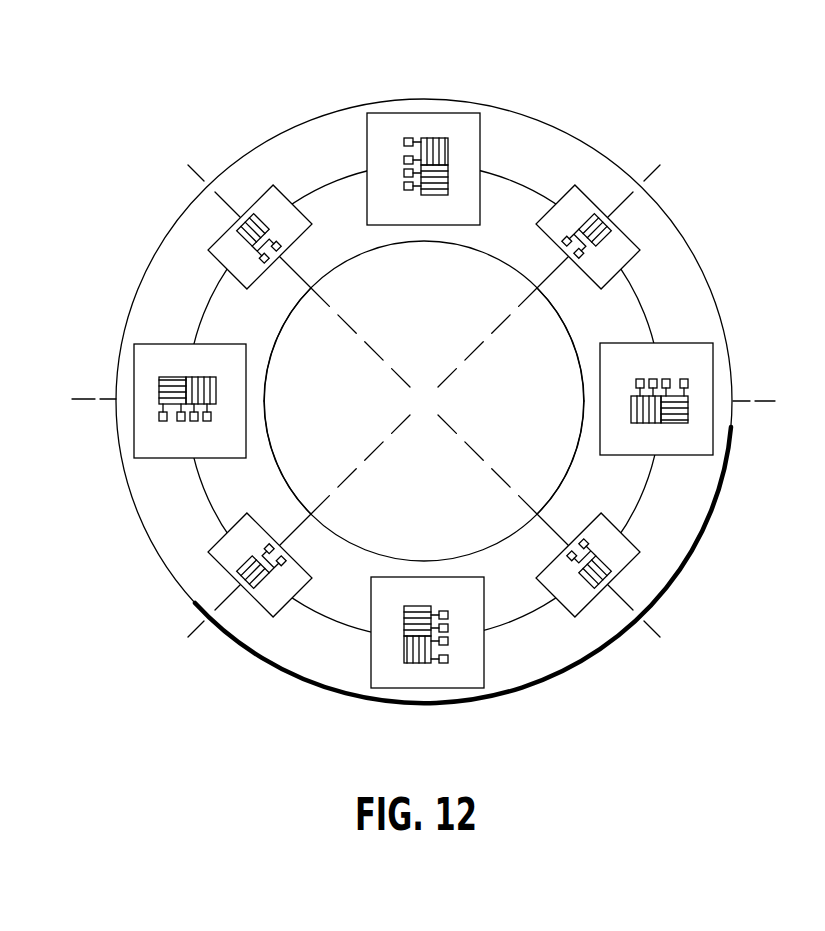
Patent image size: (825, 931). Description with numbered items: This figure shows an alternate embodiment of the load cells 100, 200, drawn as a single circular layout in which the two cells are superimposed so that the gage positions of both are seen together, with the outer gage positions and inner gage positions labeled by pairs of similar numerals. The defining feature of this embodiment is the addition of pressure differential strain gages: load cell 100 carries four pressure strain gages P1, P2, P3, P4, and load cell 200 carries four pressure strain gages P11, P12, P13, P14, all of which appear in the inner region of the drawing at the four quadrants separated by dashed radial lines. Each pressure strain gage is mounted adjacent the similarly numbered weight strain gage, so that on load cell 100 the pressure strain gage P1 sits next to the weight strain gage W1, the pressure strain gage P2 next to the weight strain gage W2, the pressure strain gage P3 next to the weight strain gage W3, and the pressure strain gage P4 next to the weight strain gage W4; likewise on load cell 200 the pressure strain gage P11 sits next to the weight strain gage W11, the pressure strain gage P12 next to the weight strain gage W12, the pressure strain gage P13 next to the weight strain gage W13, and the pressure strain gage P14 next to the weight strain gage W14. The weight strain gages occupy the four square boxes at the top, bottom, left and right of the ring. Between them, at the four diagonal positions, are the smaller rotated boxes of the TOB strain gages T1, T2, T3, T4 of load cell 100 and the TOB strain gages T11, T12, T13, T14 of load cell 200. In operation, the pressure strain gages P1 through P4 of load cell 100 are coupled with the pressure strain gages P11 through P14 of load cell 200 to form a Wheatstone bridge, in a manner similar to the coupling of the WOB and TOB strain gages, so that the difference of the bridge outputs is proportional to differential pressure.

The load cell 100 is at (423, 382).
The load cell 200 is at (548, 109).
The weight strain gage W1 is at (423, 142).
The weight strain gage W11 is at (423, 142).
The weight strain gage W2 is at (190, 371).
The weight strain gage W12 is at (190, 371).
The weight strain gage W3 is at (427, 660).
The weight strain gage W13 is at (427, 660).
The weight strain gage W4 is at (656, 431).
The weight strain gage W14 is at (656, 431).
The TOB strain gage T1 is at (267, 217).
The TOB strain gage T11 is at (267, 217).
The TOB strain gage T2 is at (242, 558).
The TOB strain gage T12 is at (242, 558).
The TOB strain gage T3 is at (588, 588).
The TOB strain gage T13 is at (588, 588).
The TOB strain gage T4 is at (608, 237).
The TOB strain gage T14 is at (608, 237).
The pressure strain gage P1 is at (424, 321).
The pressure strain gage P11 is at (424, 321).
The pressure strain gage P2 is at (340, 401).
The pressure strain gage P12 is at (340, 401).
The pressure strain gage P3 is at (424, 481).
The pressure strain gage P13 is at (424, 481).
The pressure strain gage P4 is at (507, 401).
The pressure strain gage P14 is at (507, 401).